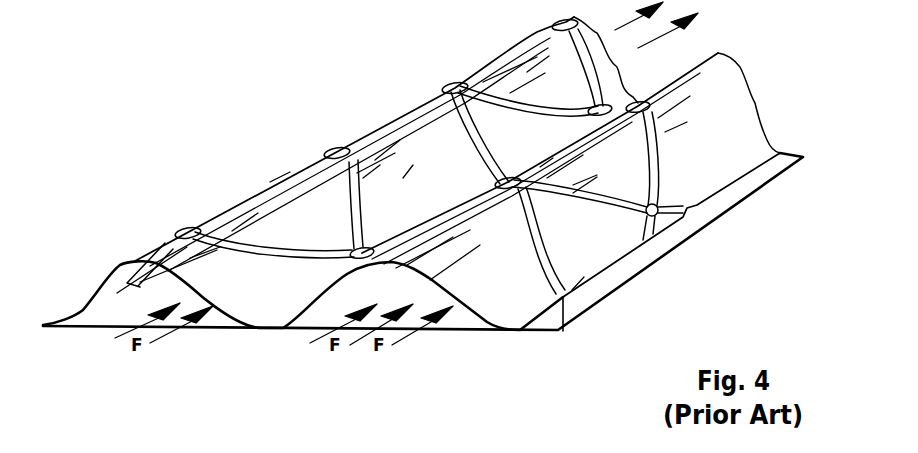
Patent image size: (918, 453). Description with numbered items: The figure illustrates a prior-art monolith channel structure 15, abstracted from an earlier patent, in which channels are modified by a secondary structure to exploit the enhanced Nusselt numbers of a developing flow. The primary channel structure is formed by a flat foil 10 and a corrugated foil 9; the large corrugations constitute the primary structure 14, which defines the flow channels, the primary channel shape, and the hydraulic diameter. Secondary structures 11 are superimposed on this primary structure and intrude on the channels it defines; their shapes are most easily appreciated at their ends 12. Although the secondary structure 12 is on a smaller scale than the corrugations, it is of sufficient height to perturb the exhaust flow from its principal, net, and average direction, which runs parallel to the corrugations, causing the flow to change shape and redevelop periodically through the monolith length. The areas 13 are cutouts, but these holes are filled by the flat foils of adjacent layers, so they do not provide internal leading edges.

The corrugated foil 9 is at (717, 172).
The flat foil 10 is at (573, 322).
The secondary structures 11 is at (528, 110).
The secondary structure 12 is at (563, 333).
The cutouts 13 is at (335, 150).
The primary structure 14 is at (412, 175).
The structure 15 is at (280, 172).